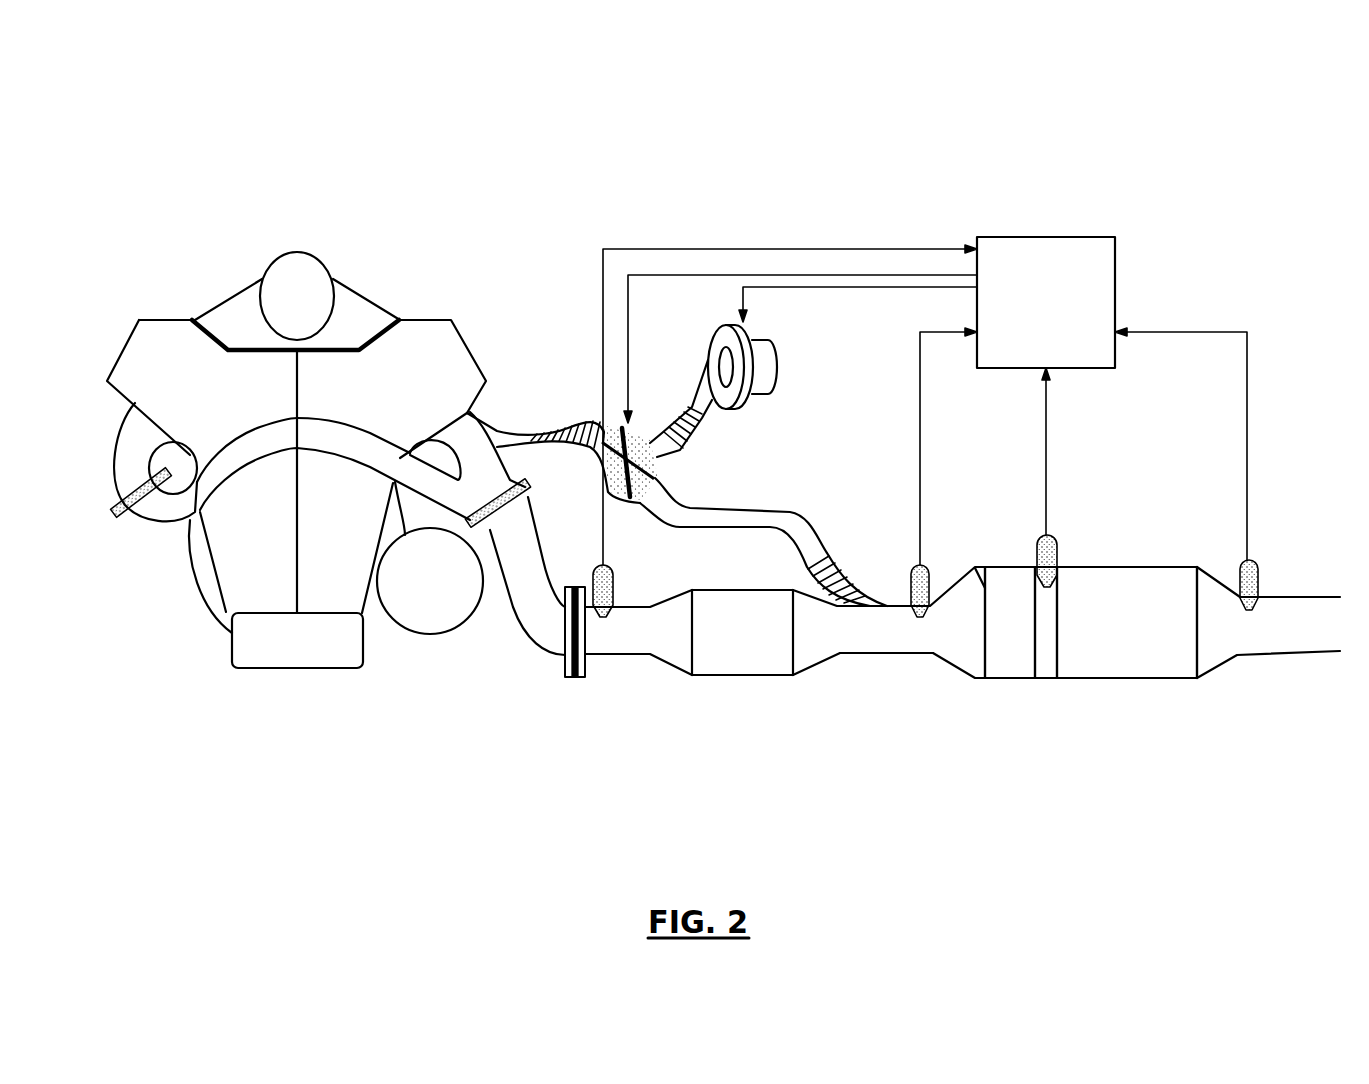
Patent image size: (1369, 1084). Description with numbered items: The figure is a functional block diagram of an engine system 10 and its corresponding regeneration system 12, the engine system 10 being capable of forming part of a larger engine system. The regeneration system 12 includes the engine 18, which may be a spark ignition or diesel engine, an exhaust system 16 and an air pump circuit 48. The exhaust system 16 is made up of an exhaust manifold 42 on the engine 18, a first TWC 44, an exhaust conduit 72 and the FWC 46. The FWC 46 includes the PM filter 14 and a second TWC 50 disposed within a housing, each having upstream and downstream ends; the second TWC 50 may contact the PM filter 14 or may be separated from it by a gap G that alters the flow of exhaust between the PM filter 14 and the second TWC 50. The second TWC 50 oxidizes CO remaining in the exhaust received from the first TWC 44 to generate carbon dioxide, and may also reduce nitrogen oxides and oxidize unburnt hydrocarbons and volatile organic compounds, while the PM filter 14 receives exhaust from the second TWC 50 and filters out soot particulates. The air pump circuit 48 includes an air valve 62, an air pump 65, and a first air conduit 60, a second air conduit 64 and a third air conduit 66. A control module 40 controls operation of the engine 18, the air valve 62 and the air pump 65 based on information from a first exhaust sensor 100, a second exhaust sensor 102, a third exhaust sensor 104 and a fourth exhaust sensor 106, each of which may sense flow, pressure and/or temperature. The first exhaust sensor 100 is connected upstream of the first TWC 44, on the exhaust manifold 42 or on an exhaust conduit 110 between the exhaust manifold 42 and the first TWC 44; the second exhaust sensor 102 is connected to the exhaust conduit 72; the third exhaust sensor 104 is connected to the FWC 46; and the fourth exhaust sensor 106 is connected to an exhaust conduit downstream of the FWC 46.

The engine system 10 is at (175, 170).
The regeneration system 12 is at (1166, 207).
The PM filter 14 is at (1125, 566).
The exhaust system 16 is at (600, 699).
The engine 18 is at (140, 320).
The control module 40 is at (1043, 237).
The exhaust manifold 42 is at (468, 410).
The first TWC 44 is at (690, 590).
The FWC 46 is at (975, 678).
The air pump circuit 48 is at (808, 396).
The second TWC 50 is at (975, 567).
The first air conduit 60 is at (553, 417).
The air valve 62 is at (677, 475).
The second air conduit 64 is at (692, 405).
The air pump 65 is at (777, 357).
The third air conduit 66 is at (777, 512).
The exhaust conduit 72 is at (878, 653).
The first exhaust sensor 100 is at (590, 565).
The second exhaust sensor 102 is at (912, 565).
The third exhaust sensor 104 is at (1037, 557).
The fourth exhaust sensor 106 is at (1240, 562).
The exhaust conduit 110 is at (652, 658).
The gap G is at (1000, 660).